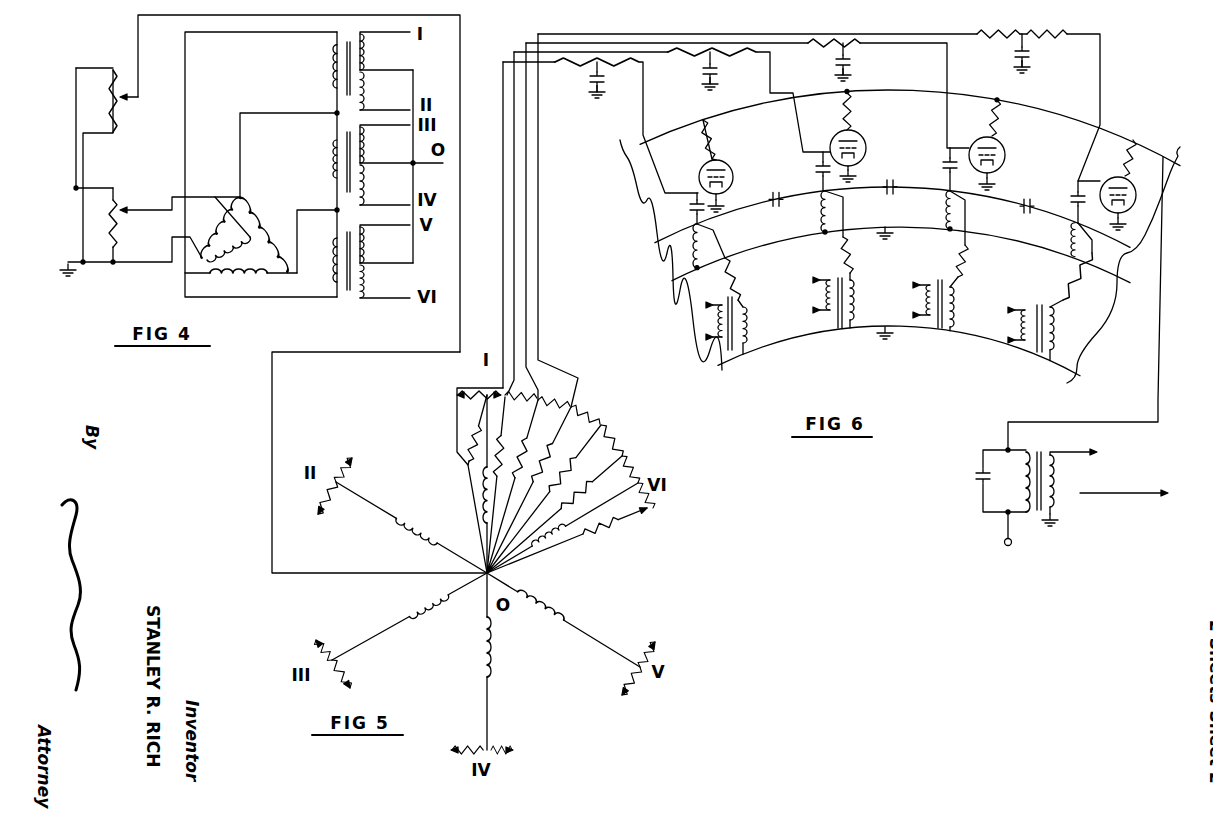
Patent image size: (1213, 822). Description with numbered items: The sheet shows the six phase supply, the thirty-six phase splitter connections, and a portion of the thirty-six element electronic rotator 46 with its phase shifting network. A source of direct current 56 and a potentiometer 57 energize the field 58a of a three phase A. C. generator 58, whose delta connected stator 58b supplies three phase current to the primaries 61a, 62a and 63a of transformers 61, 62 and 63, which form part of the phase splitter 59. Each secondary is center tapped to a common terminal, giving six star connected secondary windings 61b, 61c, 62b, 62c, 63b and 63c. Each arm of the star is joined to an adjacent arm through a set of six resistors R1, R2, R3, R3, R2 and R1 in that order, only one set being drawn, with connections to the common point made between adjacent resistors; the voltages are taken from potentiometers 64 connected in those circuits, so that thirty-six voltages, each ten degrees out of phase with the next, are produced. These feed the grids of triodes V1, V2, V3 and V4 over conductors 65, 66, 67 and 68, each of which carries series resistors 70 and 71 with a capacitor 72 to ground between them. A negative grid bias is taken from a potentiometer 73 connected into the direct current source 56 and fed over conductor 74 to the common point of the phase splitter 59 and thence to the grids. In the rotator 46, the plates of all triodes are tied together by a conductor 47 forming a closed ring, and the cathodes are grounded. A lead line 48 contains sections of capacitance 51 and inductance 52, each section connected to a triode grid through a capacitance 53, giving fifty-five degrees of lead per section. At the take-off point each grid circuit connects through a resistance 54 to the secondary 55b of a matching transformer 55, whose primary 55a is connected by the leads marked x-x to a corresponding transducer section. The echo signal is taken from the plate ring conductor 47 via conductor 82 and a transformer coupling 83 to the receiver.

In FIG. 6, the electronic rotator 46 is at (899, 351).
In FIG. 6, the conductor 47 is at (1140, 144).
In FIG. 6, the lead line 48 is at (892, 235).
In FIG. 6, the capacitance 51 is at (778, 193).
In FIG. 6, the inductance 52 is at (694, 250).
In FIG. 6, the capacitance 53 is at (688, 208).
In FIG. 6, the resistance 54 is at (740, 270).
In FIG. 6, the matching transformer 55 is at (882, 324).
In FIG. 6, the primary 55a is at (712, 332).
In FIG. 6, the secondary 55b is at (747, 308).
In FIG. 4, the source of direct current 56 is at (115, 172).
In FIG. 4, the potentiometer 57 is at (119, 222).
In FIG. 4, the three phase A. C. generator 58 is at (241, 219).
In FIG. 4, the field 58a is at (230, 212).
In FIG. 4, the stator 58b is at (260, 226).
In FIG. 4, the phase splitter 59 is at (360, 183).
In FIG. 4, the transformer 61 is at (345, 71).
In FIG. 4, the primary 61a is at (330, 76).
In FIG. 4, the secondary winding 61b is at (369, 48).
In FIG. 5, the secondary winding 61b is at (481, 496).
In FIG. 4, the secondary winding 61c is at (369, 86).
In FIG. 5, the secondary winding 61c is at (428, 538).
In FIG. 4, the transformer 62 is at (361, 164).
In FIG. 4, the primary 62a is at (330, 152).
In FIG. 4, the secondary winding 62b is at (369, 142).
In FIG. 5, the secondary winding 62b is at (425, 628).
In FIG. 4, the secondary winding 62c is at (369, 176).
In FIG. 5, the secondary winding 62c is at (493, 652).
In FIG. 4, the transformer 63 is at (352, 260).
In FIG. 4, the primary 63a is at (333, 272).
In FIG. 4, the secondary winding 63b is at (369, 240).
In FIG. 5, the secondary winding 63b is at (557, 618).
In FIG. 4, the secondary winding 63c is at (369, 279).
In FIG. 5, the secondary winding 63c is at (553, 546).
In FIG. 5, the potentiometer 64 is at (533, 484).
In FIG. 6, the conductor 65 is at (503, 127).
In FIG. 6, the conductor 66 is at (514, 138).
In FIG. 6, the conductor 67 is at (526, 155).
In FIG. 6, the conductor 68 is at (538, 170).
In FIG. 6, the resistor 70 is at (580, 66).
In FIG. 6, the resistor 71 is at (610, 70).
In FIG. 6, the capacitor 72 is at (592, 90).
In FIG. 4, the potentiometer 73 is at (120, 104).
In FIG. 5, the conductor 74 is at (274, 378).
In FIG. 6, the conductor 82 is at (1158, 372).
In FIG. 6, the transformer coupling 83 is at (1039, 452).
In FIG. 5, the resistor R1 is at (499, 391).
In FIG. 5, the resistor R2 is at (612, 432).
In FIG. 5, the resistor R3 is at (582, 418).
In FIG. 6, the triode V1 is at (727, 165).
In FIG. 6, the triode V2 is at (866, 145).
In FIG. 6, the triode V3 is at (1004, 152).
In FIG. 6, the triode V4 is at (1109, 184).